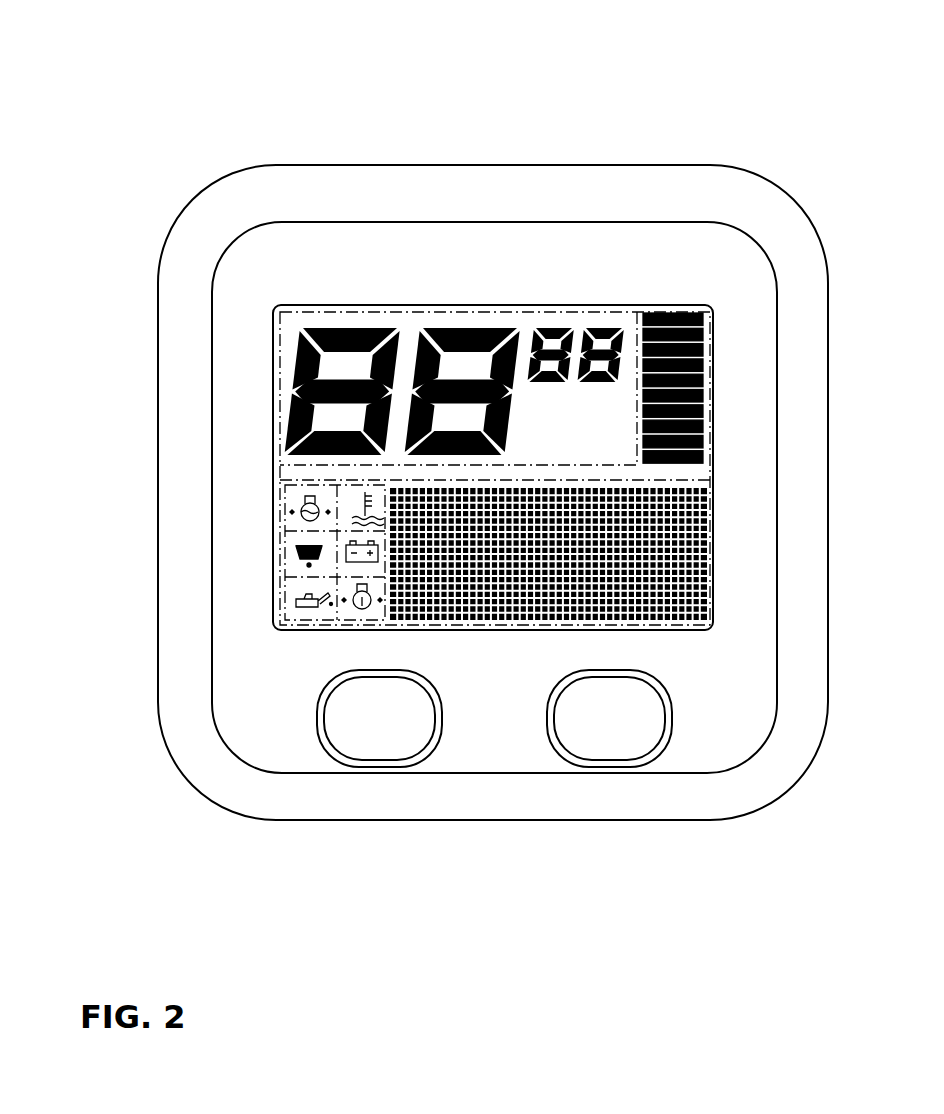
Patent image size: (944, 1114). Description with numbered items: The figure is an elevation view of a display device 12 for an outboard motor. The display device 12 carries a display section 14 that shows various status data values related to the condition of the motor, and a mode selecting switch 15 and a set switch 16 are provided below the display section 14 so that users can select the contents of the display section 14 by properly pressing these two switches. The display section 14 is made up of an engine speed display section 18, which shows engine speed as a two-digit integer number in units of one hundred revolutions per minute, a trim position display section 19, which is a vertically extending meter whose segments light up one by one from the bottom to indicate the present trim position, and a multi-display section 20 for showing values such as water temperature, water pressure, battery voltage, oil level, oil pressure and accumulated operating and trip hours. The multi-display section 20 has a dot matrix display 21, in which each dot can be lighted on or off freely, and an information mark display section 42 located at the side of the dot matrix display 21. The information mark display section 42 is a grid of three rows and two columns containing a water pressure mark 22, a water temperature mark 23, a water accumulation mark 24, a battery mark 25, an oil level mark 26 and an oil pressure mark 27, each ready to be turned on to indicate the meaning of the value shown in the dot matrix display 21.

The display device 12 is at (612, 128).
The display section 14 is at (510, 305).
The mode selecting switch 15 is at (604, 742).
The set switch 16 is at (375, 742).
The engine speed display section 18 is at (418, 312).
The trim position display section 19 is at (677, 312).
The multi-display section 20 is at (455, 630).
The dot matrix display 21 is at (676, 634).
The water pressure mark 22 is at (285, 493).
The water temperature mark 23 is at (347, 522).
The water accumulation mark 24 is at (285, 558).
The battery mark 25 is at (347, 566).
The oil level mark 26 is at (285, 605).
The oil pressure mark 27 is at (362, 622).
The information mark display section 42 is at (210, 490).